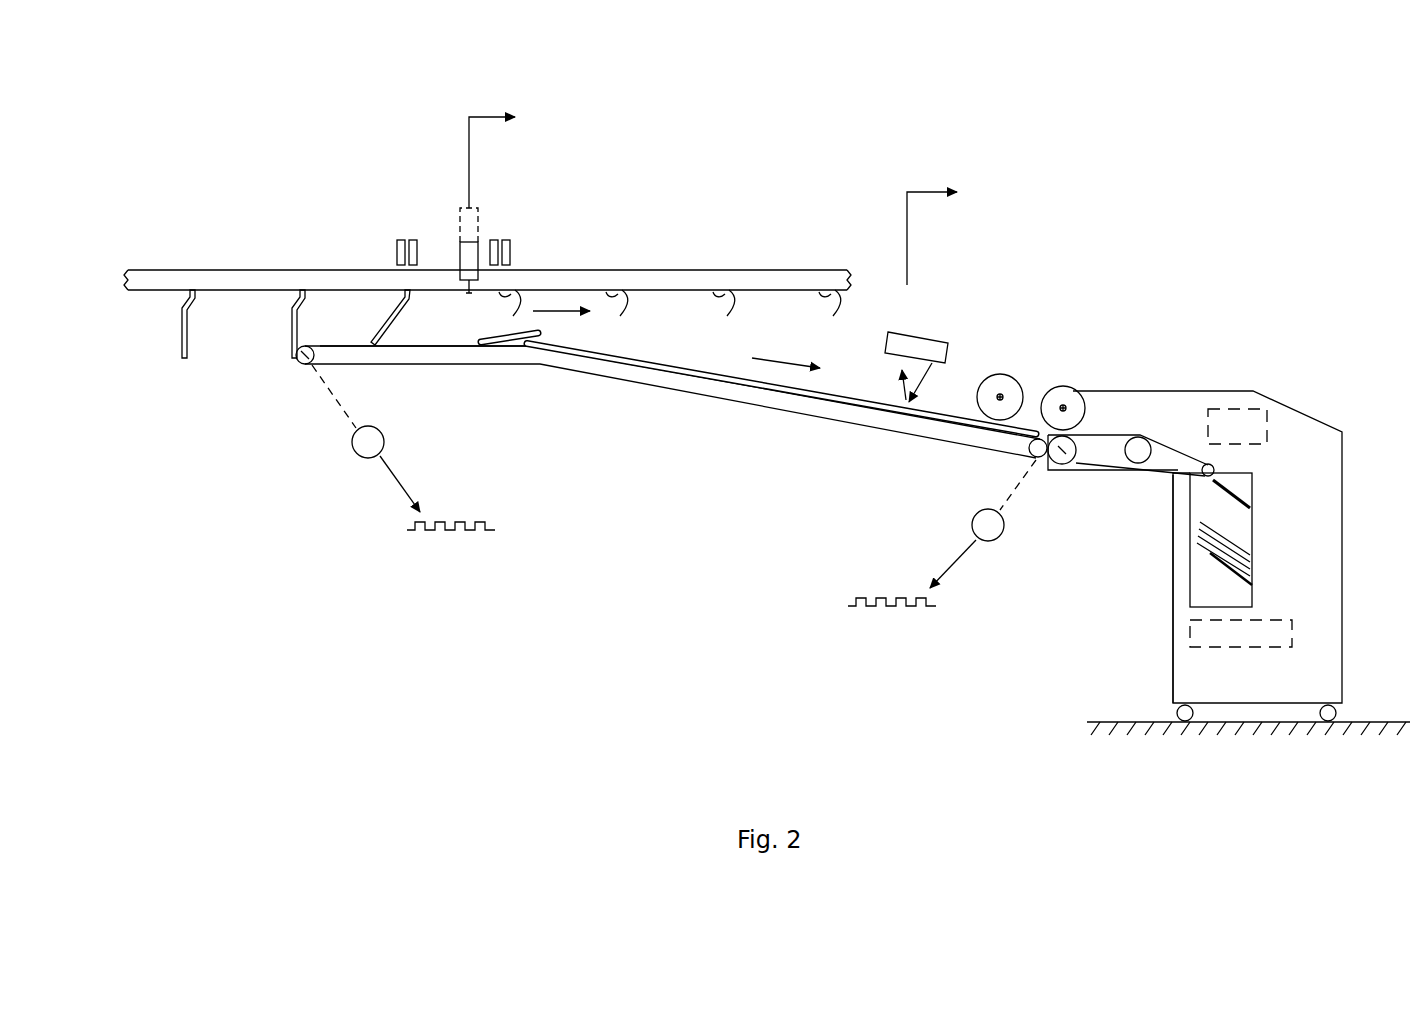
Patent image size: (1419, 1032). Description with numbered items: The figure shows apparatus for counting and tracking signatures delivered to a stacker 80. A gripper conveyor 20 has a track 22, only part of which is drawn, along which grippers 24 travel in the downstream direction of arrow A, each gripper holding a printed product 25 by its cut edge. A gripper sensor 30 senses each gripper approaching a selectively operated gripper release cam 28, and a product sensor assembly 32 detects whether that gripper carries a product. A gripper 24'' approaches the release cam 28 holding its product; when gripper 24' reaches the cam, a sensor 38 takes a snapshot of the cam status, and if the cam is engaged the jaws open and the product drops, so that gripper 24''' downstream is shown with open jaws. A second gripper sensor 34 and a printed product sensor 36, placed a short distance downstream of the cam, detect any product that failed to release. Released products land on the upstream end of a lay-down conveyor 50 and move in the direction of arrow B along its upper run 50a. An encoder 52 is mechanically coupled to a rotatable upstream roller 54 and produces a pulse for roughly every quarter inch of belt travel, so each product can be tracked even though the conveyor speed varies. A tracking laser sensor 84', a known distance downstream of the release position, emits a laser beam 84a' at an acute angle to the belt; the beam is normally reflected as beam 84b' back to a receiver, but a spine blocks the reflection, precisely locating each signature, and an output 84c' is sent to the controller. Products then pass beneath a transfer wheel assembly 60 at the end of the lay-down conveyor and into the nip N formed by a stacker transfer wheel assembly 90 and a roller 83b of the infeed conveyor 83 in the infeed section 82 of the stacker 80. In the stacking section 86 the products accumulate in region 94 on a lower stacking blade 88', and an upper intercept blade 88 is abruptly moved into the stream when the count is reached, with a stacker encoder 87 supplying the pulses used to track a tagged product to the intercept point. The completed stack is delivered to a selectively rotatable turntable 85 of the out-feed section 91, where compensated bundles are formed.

The gripper conveyor 20 is at (255, 262).
The track 22 is at (830, 270).
The gripper 24 is at (155, 324).
The gripper 24' is at (260, 324).
The gripper 24'' is at (365, 317).
The gripper 24''' is at (630, 310).
The printed product 25 is at (182, 360).
The gripper release cam 28 is at (486, 213).
The gripper sensor 30 is at (393, 237).
The product sensor assembly 32 is at (416, 234).
The second gripper sensor 34 is at (498, 237).
The printed product sensor 36 is at (510, 250).
The sensor 38 is at (487, 198).
The lay-down conveyor 50 is at (864, 440).
The upper run 50a is at (425, 352).
The encoder 52 is at (352, 442).
The upstream roller 54 is at (300, 358).
The transfer wheel assembly 60 is at (1025, 368).
The stacker 80 is at (1392, 584).
The infeed section 82 is at (1105, 412).
The infeed conveyor 83 is at (1100, 474).
The roller 83b is at (1068, 464).
The laser sensor 84' is at (1029, 270).
The emitted laser beam 84a' is at (961, 369).
The reflected laser beam 84b' is at (866, 369).
The output 84c' is at (898, 308).
The turntable 85 is at (1170, 660).
The stacking section 86 is at (1285, 400).
The stacker encoder 87 is at (972, 525).
The upper stacking blade 88 is at (1256, 537).
The lower stacking blade assembly 88' is at (1267, 577).
The transfer wheel assembly 90 is at (1080, 369).
The out-feed section 91 is at (1322, 630).
The region 94 is at (1210, 595).
The arrow A is at (765, 358).
The arrow B is at (560, 312).
The nip N is at (1022, 463).